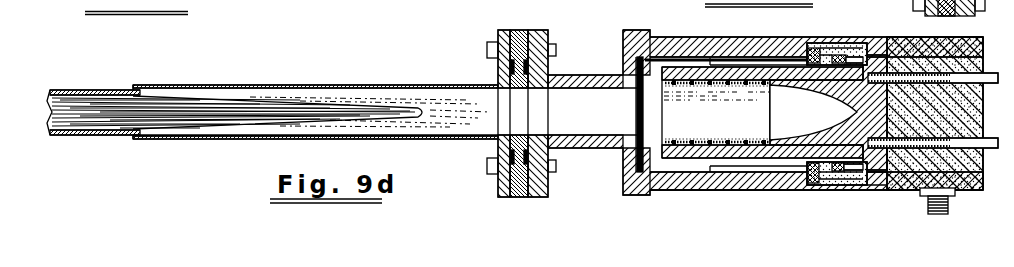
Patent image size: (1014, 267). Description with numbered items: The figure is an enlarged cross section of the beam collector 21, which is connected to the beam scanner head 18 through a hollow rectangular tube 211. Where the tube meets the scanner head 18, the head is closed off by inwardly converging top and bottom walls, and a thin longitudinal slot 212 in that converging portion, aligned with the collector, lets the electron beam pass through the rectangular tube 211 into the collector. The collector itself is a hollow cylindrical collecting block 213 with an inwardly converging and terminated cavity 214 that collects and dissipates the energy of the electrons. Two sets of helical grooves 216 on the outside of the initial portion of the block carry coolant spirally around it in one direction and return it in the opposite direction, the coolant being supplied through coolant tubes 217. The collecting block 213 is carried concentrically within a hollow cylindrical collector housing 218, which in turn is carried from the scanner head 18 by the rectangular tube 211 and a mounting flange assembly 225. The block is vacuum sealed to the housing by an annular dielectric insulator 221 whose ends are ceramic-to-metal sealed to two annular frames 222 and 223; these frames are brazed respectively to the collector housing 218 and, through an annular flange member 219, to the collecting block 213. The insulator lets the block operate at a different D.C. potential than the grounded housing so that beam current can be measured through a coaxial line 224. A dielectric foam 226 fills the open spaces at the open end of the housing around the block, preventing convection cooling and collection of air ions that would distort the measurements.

The beam scanner head 18 is at (109, 90).
The hollow rectangular tube 211 is at (295, 88).
The thin longitudinal slot 212 is at (349, 104).
The mounting flange assembly 225 is at (520, 31).
The collector housing 218 is at (668, 38).
The beam collector 21 is at (699, 197).
The helical grooves 216 is at (729, 148).
The inwardly converging and terminated cavity 214 is at (742, 127).
The collecting block 213 is at (873, 98).
The coolant tubes 217 is at (957, 143).
The annular frame 222 is at (825, 43).
The annular frame 223 is at (862, 46).
The annular flange member 219 is at (812, 165).
The annular dielectric insulator 221 is at (831, 180).
The dielectric foam 226 is at (883, 192).
The coaxial line 224 is at (926, 203).